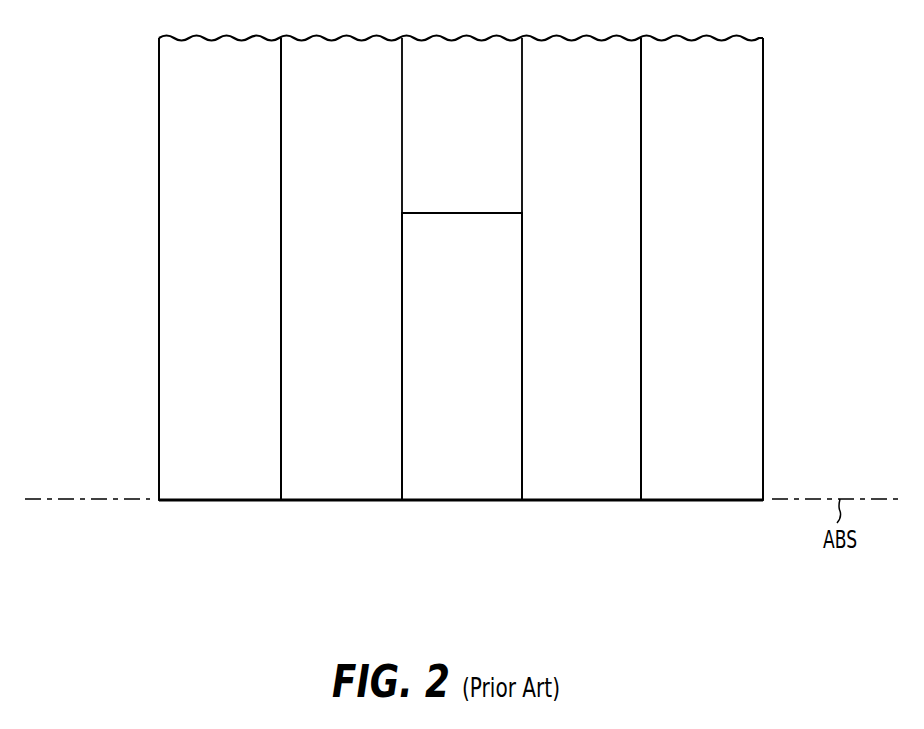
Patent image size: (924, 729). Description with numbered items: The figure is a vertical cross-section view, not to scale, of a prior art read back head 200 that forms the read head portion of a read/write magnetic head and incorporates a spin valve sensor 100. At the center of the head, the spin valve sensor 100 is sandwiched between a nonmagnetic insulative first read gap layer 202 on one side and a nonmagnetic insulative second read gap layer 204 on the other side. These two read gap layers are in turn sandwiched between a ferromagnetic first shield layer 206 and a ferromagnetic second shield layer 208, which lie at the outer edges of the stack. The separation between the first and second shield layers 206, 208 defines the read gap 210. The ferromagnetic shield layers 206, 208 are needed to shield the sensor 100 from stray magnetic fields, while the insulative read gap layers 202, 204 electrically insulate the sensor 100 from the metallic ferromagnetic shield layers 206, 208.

The read back head 200 is at (485, 369).
The first shield layer 206 is at (213, 500).
The first read gap layer 202 is at (403, 525).
The spin valve sensor 100 is at (478, 430).
The second read gap layer 204 is at (582, 305).
The second shield layer 208 is at (707, 500).
The read gap 210 is at (462, 331).